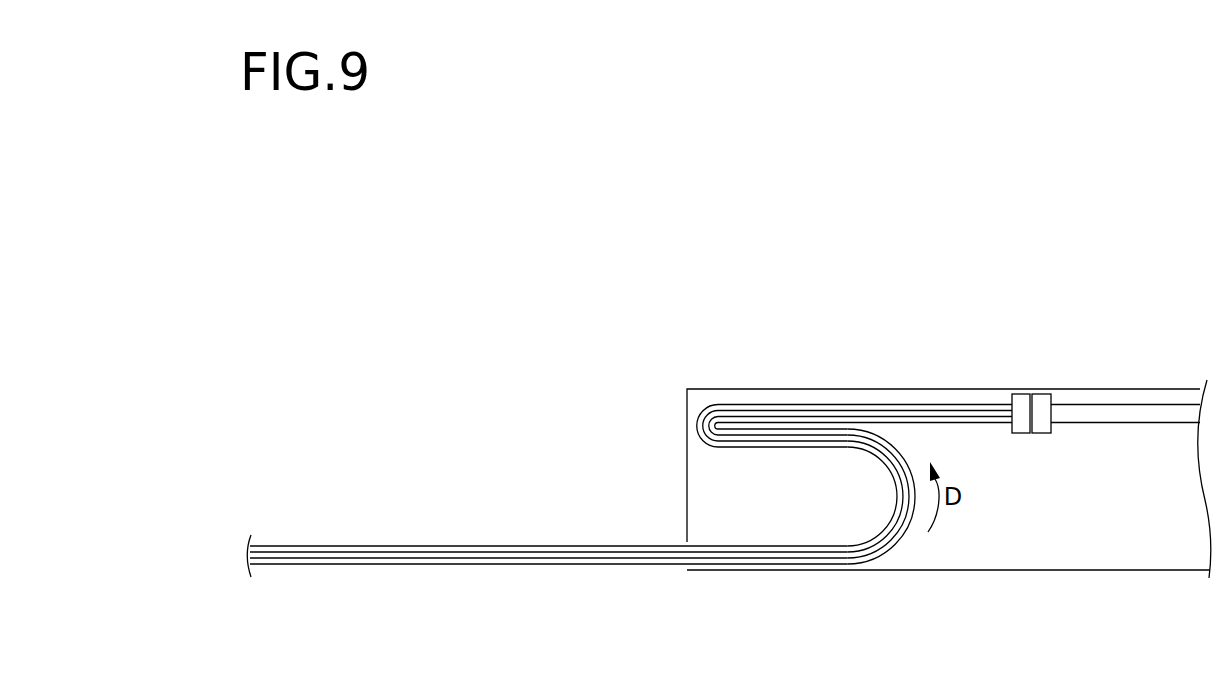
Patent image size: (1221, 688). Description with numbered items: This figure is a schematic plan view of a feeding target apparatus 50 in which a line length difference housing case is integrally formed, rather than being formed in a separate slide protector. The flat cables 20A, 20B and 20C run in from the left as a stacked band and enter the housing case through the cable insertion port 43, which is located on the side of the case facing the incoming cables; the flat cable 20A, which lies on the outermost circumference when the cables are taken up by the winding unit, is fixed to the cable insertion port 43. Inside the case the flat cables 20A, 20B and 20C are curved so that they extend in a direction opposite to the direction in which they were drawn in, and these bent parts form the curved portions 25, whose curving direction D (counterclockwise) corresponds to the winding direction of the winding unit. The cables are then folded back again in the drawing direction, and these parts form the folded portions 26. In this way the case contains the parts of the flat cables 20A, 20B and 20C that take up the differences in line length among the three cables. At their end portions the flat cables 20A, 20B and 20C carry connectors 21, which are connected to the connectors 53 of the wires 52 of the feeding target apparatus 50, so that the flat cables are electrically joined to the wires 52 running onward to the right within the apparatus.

The flat cable 20A is at (413, 546).
The flat cable 20B is at (472, 558).
The flat cable 20C is at (520, 567).
The connector 21 is at (1046, 367).
The curved portion 25 is at (912, 532).
The folded portion 26 is at (733, 405).
The cable insertion port 43 is at (686, 542).
The feeding target apparatus 50 is at (1050, 578).
The wire 52 is at (1152, 413).
The connector 53 is at (1042, 390).